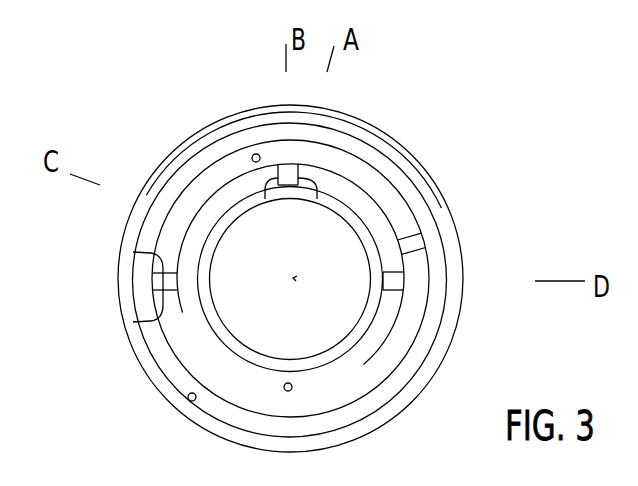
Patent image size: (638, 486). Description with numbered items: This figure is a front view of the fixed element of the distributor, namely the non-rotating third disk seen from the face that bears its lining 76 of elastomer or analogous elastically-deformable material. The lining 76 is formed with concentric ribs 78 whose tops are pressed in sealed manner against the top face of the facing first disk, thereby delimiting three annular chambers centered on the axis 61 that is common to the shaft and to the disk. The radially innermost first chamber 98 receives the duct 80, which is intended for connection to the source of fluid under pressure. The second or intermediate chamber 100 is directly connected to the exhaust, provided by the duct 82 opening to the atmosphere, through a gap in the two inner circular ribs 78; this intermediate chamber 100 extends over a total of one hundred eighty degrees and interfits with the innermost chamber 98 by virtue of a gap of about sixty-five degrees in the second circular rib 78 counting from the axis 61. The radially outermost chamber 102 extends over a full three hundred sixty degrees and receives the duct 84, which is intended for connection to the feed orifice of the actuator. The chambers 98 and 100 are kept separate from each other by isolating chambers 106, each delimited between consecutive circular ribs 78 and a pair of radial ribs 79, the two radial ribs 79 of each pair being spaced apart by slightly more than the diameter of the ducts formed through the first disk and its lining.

The axis 61 is at (296, 281).
The lining 76 is at (151, 163).
The concentric ribs 78 is at (210, 192).
The radial ribs 79 is at (309, 203).
The duct 80 is at (292, 389).
The duct 82 is at (257, 153).
The duct 84 is at (196, 401).
The first chamber 98 is at (229, 200).
The intermediate chamber 100 is at (380, 195).
The outermost chamber 102 is at (423, 212).
The isolating chambers 106 is at (292, 177).